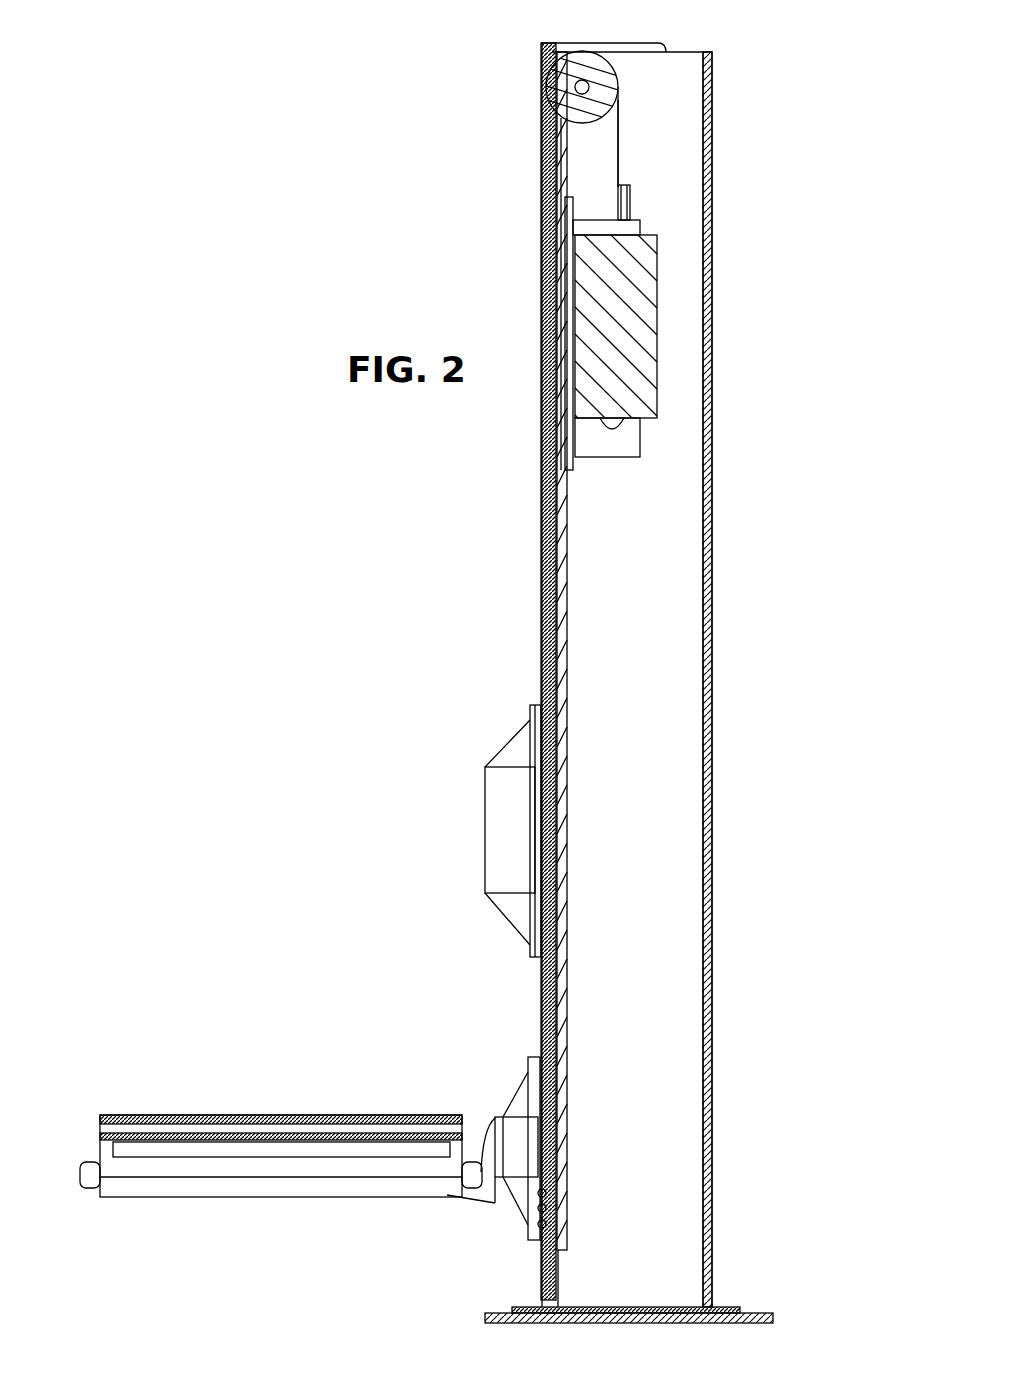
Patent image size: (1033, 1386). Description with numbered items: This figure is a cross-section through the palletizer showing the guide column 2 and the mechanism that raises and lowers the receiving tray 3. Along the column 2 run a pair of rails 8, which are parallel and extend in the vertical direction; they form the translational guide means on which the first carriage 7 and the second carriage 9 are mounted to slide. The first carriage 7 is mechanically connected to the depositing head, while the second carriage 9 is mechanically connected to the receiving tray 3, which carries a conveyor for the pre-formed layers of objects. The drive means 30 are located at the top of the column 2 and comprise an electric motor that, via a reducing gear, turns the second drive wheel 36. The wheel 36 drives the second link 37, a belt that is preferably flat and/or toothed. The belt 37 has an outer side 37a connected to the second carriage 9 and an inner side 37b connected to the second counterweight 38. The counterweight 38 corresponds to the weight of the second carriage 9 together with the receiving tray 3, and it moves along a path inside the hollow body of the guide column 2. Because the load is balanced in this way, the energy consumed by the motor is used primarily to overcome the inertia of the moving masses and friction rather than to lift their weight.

The guide column 2 is at (514, 568).
The receiving tray 3 is at (150, 1108).
The first carriage 7 is at (503, 798).
The rails 8 is at (545, 144).
The second carriage 9 is at (530, 1081).
The drive means 30 is at (532, 61).
The second drive wheel 36 is at (574, 88).
The second link 37 is at (626, 128).
The outer side 37a is at (544, 112).
The inner side 37b is at (621, 151).
The second counterweight 38 is at (638, 352).